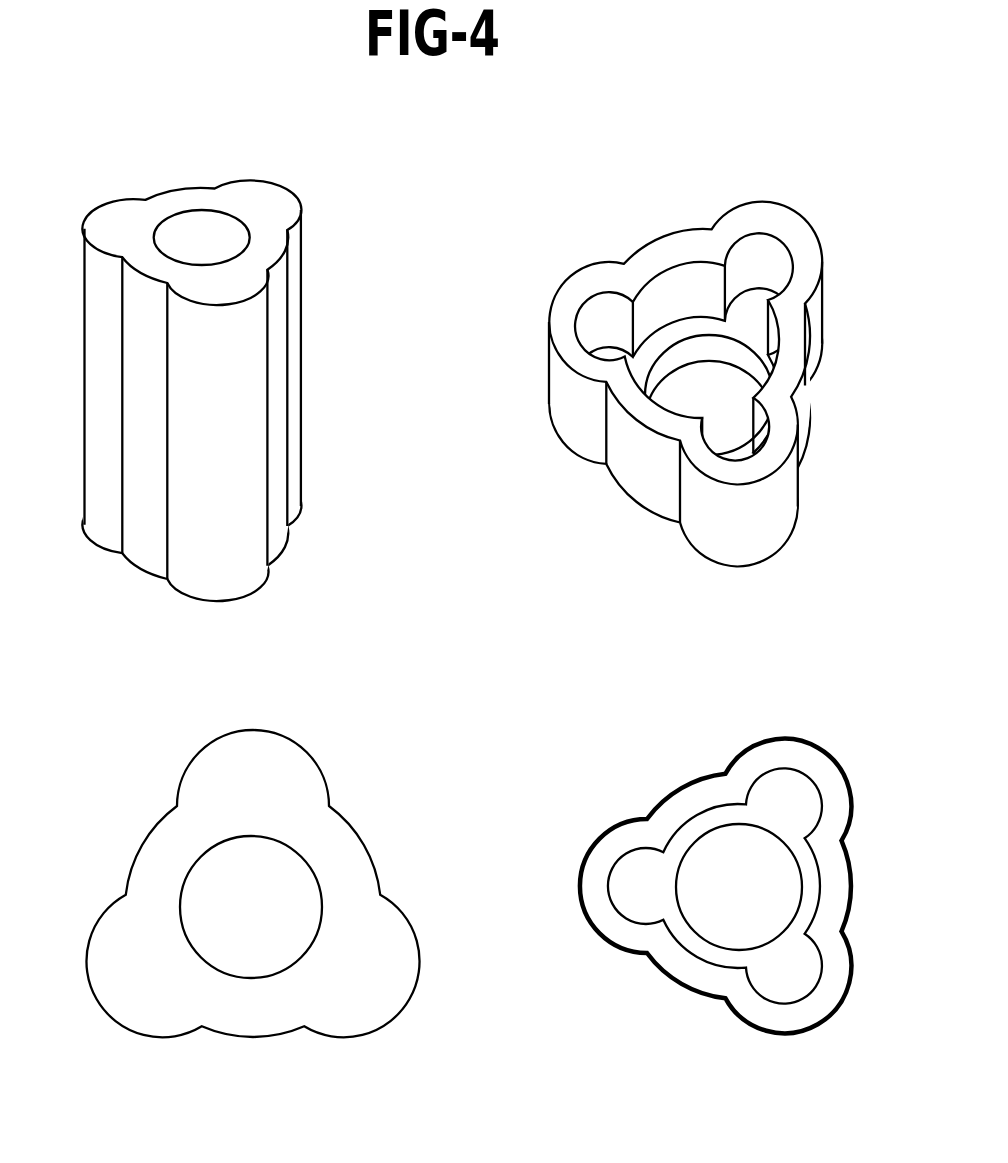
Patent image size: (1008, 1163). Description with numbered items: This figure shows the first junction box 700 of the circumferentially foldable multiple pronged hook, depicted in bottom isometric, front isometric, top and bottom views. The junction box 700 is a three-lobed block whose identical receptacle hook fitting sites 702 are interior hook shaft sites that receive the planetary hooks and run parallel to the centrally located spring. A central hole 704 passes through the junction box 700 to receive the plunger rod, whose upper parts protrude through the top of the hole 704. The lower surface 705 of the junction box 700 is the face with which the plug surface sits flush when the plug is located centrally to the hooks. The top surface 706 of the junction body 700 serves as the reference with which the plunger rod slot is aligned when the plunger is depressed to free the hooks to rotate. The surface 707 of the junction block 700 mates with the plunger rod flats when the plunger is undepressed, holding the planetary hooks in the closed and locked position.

The junction box 700 is at (471, 646).
The receptacle hook fitting site 702 is at (615, 384).
The hole 704 is at (242, 217).
The lower surface 705 is at (711, 467).
The top surface 706 is at (290, 777).
The surface 707 is at (668, 826).